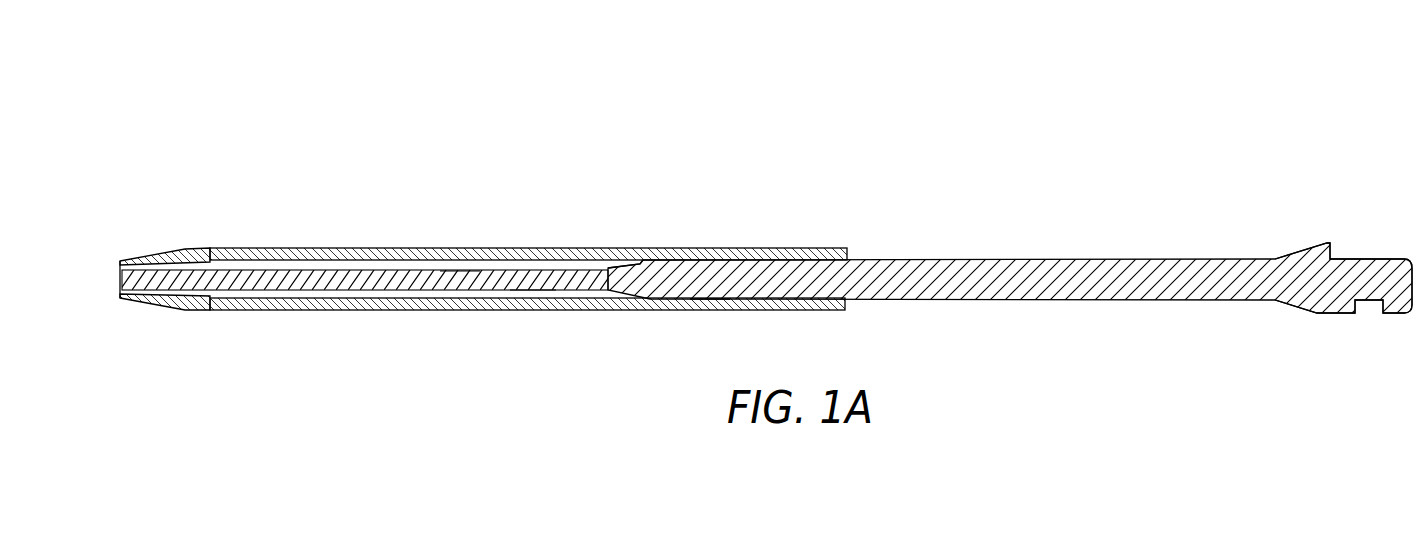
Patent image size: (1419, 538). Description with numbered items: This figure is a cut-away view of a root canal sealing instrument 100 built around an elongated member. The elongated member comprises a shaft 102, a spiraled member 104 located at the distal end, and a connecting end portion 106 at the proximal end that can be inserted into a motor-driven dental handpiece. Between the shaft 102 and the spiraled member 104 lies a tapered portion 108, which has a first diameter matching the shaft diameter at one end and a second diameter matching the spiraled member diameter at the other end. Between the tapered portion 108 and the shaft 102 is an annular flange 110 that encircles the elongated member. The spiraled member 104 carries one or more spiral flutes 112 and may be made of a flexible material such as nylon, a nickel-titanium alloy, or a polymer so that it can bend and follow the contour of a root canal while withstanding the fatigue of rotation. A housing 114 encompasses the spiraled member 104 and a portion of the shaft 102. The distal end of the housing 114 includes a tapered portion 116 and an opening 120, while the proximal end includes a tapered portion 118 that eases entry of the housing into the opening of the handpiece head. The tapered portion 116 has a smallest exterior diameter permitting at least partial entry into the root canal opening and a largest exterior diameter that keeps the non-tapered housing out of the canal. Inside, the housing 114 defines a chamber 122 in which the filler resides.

The root canal sealing instrument 100 is at (207, 68).
The shaft 102 is at (963, 300).
The spiraled member 104 is at (333, 282).
The connecting end portion 106 is at (1320, 314).
The tapered portion 108 is at (642, 264).
The annular flange 110 is at (707, 300).
The spiral flutes 112 is at (457, 284).
The housing 114 is at (242, 309).
The tapered portion 116 is at (167, 252).
The tapered portion 118 is at (848, 252).
The opening 120 is at (120, 285).
The chamber 122 is at (533, 294).